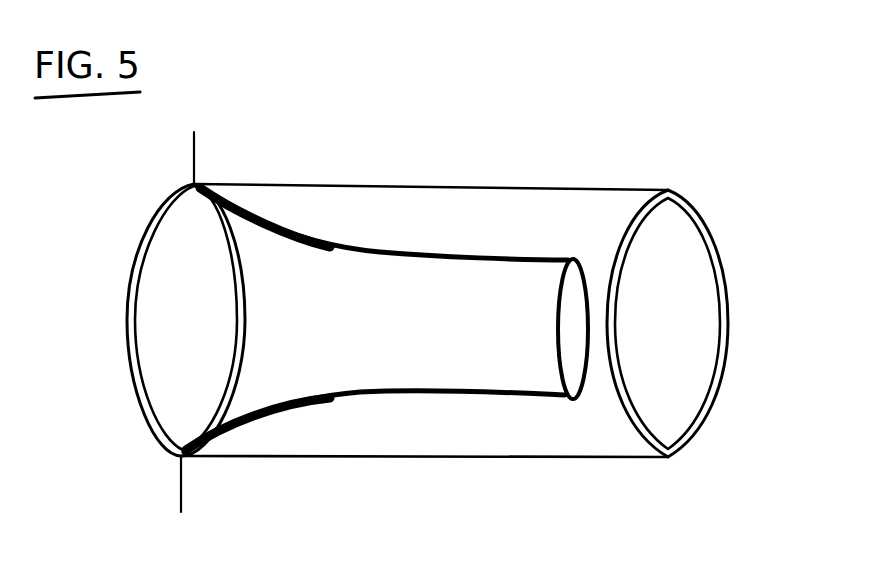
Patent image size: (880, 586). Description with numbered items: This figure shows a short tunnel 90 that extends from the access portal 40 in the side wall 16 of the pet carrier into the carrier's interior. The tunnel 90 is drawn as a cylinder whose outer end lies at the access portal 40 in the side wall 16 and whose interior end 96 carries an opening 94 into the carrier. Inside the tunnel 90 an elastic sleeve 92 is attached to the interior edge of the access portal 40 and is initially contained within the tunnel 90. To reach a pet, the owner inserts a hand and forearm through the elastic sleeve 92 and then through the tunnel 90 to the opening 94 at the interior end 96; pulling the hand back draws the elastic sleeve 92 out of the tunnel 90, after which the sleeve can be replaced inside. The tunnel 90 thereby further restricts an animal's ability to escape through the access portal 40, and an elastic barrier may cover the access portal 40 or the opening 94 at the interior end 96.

The tunnel 90 is at (423, 183).
The access portal 40 is at (200, 323).
The elastic sleeve 92 is at (470, 260).
The opening 94 is at (698, 327).
The interior end 96 is at (667, 463).
The side wall 16 is at (178, 493).